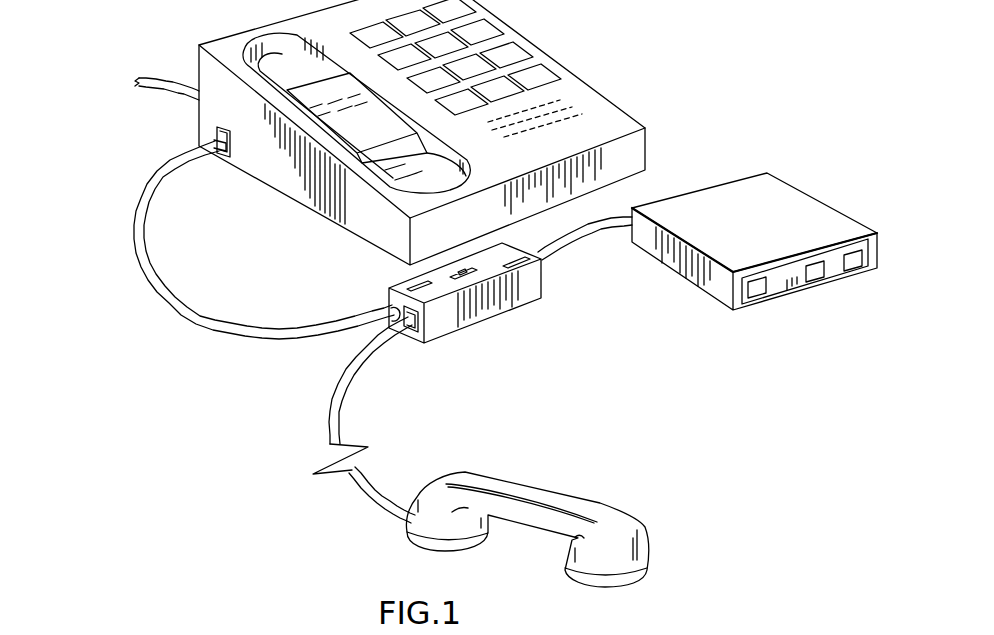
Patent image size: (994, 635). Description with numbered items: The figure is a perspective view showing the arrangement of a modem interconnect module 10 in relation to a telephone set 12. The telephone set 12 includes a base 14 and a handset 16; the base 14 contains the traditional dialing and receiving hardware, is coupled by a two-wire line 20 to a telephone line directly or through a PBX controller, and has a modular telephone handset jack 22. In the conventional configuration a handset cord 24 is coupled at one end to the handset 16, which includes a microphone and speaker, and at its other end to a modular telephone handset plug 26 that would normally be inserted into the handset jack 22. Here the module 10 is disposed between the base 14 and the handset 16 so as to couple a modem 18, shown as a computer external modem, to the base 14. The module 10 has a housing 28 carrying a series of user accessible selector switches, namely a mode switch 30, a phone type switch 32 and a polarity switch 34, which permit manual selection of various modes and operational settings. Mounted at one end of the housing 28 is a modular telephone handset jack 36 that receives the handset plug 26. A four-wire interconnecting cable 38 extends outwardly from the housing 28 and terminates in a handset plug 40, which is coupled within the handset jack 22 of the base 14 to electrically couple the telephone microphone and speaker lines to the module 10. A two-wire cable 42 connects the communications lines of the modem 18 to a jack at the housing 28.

The modem interconnect module 10 is at (461, 316).
The telephone set 12 is at (438, 132).
The base 14 is at (633, 117).
The handset 16 is at (567, 500).
The modem 18 is at (786, 191).
The line 20 is at (166, 82).
The modular telephone handset jack 22 is at (217, 127).
The handset cord 24 is at (378, 495).
The modular telephone handset plug 26 is at (388, 304).
The housing 28 is at (531, 293).
The mode switch 30 is at (468, 279).
The phone type switch 32 is at (523, 267).
The polarity switch 34 is at (409, 284).
The modular telephone handset jack 36 is at (415, 333).
The four-wire interconnecting cable 38 is at (198, 301).
The handset plug 40 is at (220, 153).
The cable 42 is at (603, 229).